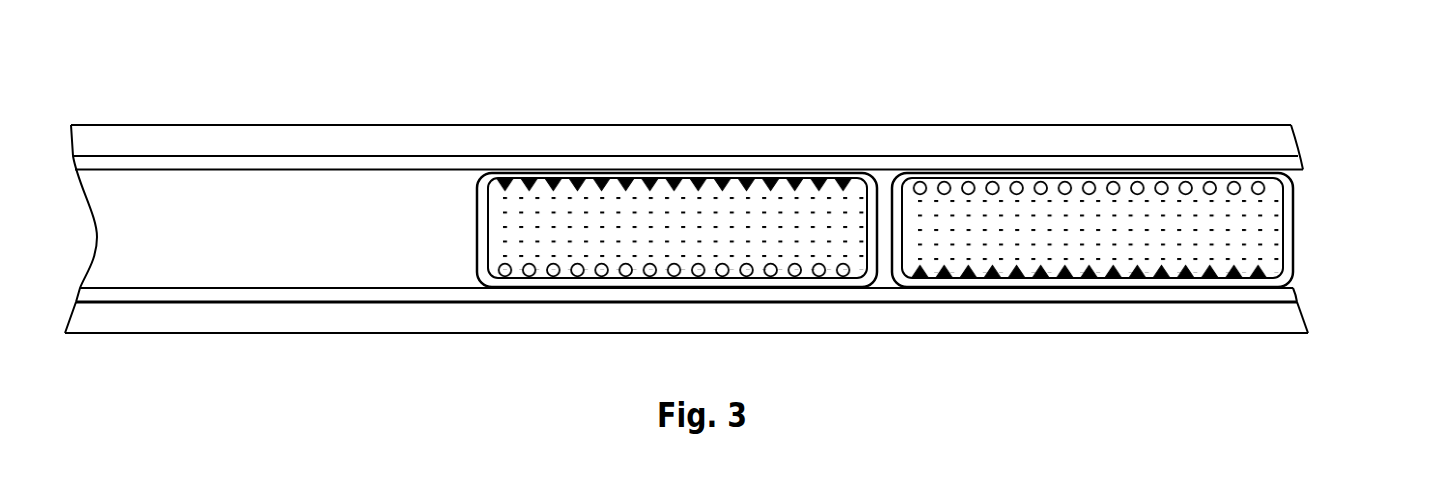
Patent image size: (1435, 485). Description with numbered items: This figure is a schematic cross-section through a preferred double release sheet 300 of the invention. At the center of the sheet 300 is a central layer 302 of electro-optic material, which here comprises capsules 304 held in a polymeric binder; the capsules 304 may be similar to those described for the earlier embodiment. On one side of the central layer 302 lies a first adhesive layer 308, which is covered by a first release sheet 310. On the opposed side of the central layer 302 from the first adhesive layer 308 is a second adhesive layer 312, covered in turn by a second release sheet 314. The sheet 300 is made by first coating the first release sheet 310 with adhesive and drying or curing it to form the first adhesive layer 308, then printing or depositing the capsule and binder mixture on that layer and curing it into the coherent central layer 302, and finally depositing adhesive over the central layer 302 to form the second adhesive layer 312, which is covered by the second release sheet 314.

The double release sheet 300 is at (603, 128).
The central layer 302 is at (1303, 203).
The capsules 304 is at (871, 196).
The first adhesive layer 308 is at (1132, 163).
The first release sheet 310 is at (1028, 137).
The second adhesive layer 312 is at (1293, 293).
The second release sheet 314 is at (1170, 316).